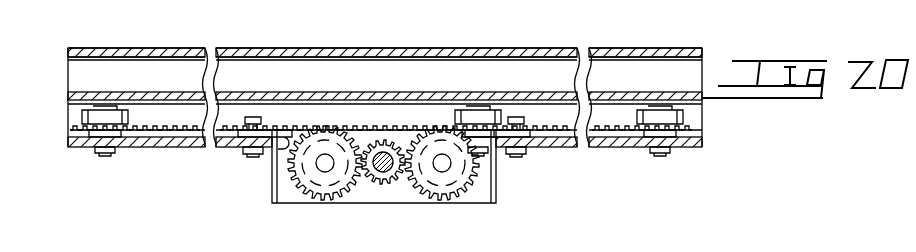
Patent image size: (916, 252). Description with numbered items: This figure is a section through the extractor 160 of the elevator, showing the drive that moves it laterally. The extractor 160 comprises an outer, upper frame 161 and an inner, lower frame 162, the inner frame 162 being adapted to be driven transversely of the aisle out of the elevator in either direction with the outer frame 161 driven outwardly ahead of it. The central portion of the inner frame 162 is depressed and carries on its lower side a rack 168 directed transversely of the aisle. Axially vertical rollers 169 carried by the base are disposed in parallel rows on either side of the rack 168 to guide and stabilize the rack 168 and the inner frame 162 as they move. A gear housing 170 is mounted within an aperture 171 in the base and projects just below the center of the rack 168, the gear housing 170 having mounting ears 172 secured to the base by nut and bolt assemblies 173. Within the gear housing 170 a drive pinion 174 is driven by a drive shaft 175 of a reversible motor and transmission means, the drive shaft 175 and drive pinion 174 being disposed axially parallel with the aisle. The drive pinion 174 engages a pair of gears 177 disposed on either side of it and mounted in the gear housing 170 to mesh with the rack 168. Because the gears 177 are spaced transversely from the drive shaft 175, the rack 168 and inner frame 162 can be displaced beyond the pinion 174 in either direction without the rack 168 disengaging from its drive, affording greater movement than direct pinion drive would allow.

The extractor 160 is at (280, 48).
The outer, upper frame 161 is at (366, 47).
The inner, lower frame 162 is at (465, 67).
The rack 168 is at (398, 109).
The axially vertical rollers 169 is at (113, 113).
The mounting ears 172 is at (236, 124).
The nut and bolt assemblies 173 is at (244, 151).
The aperture 171 is at (283, 144).
The gear housing 170 is at (498, 186).
The gears 177 is at (313, 187).
The drive shaft 175 is at (378, 170).
The drive pinion 174 is at (392, 177).